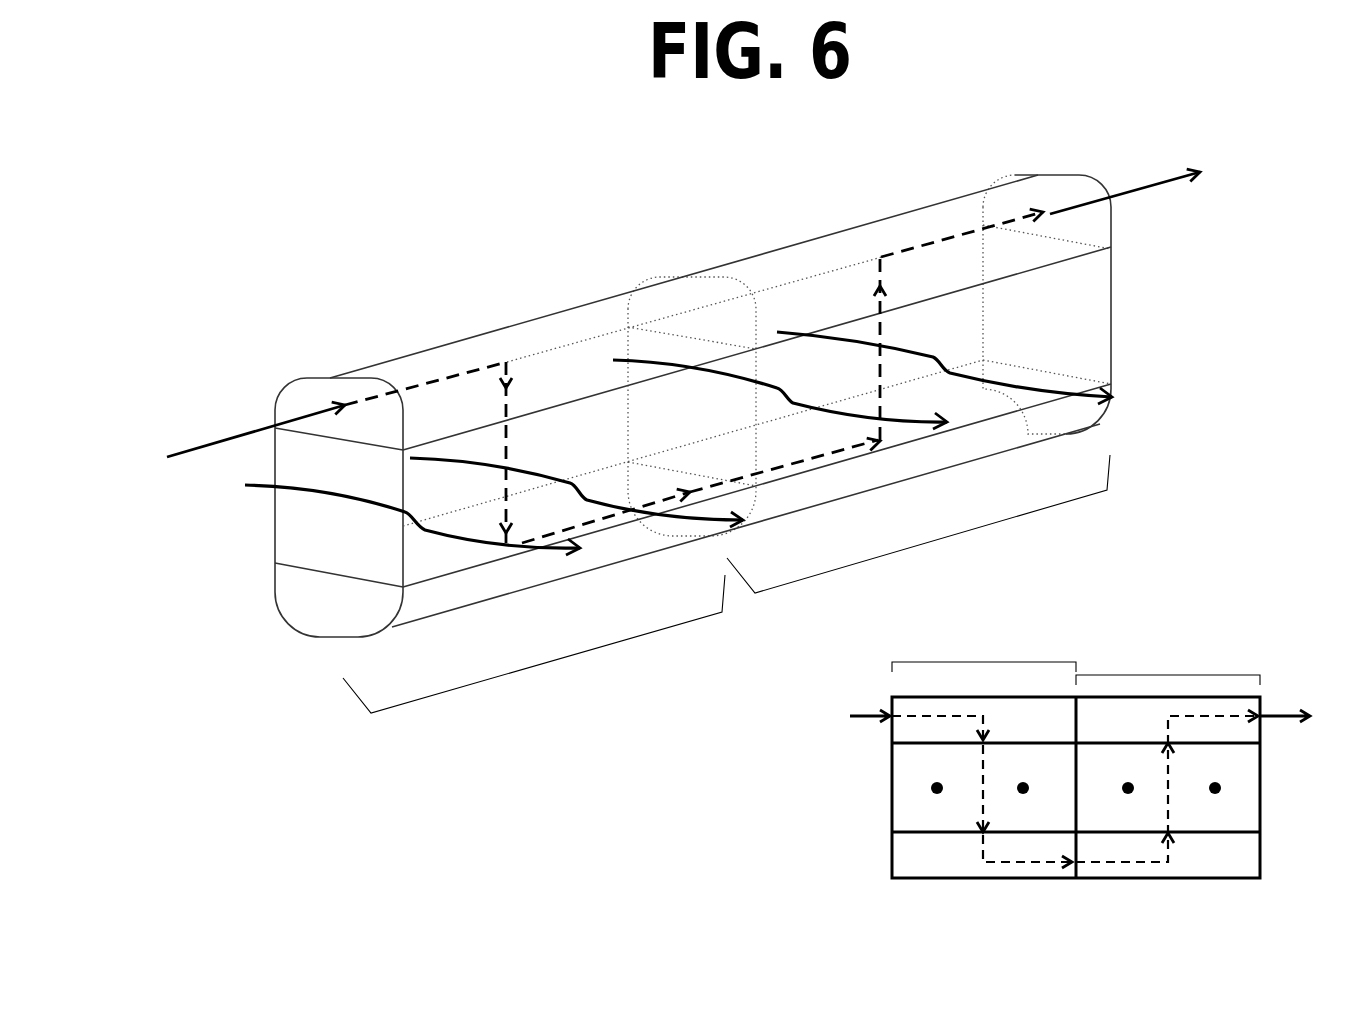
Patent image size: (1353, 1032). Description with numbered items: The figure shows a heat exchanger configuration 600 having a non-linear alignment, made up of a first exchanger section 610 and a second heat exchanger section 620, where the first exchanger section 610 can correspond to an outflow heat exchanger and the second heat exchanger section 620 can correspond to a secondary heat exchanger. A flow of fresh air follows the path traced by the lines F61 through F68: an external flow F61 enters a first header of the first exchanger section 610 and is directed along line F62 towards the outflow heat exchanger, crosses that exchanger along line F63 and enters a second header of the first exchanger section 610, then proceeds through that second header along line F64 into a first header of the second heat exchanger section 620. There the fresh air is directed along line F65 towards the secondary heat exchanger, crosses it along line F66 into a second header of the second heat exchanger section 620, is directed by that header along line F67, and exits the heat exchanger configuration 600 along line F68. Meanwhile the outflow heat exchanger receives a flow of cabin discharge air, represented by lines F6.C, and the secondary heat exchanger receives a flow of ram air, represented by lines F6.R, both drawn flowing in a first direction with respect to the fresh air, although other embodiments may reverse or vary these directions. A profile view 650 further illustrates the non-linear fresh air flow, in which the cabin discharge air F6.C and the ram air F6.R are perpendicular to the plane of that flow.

The heat exchanger configuration 600 is at (457, 197).
The first exchanger section 610 is at (543, 663).
The second heat exchanger section 620 is at (1077, 503).
The profile view 650 is at (850, 805).
The external flow line F61 is at (213, 443).
The flow line toward outflow heat exchanger F62 is at (431, 380).
The flow line crossing outflow heat exchanger F63 is at (508, 458).
The flow line through second header of first section F64 is at (533, 548).
The flow line toward secondary heat exchanger F65 is at (804, 462).
The flow line crossing secondary heat exchanger F66 is at (877, 357).
The flow line through second header of second section F67 is at (945, 237).
The exit flow line F68 is at (1147, 183).
The cabin discharge air flow lines F6.C is at (428, 460).
The ram air flow lines F6.R is at (907, 417).